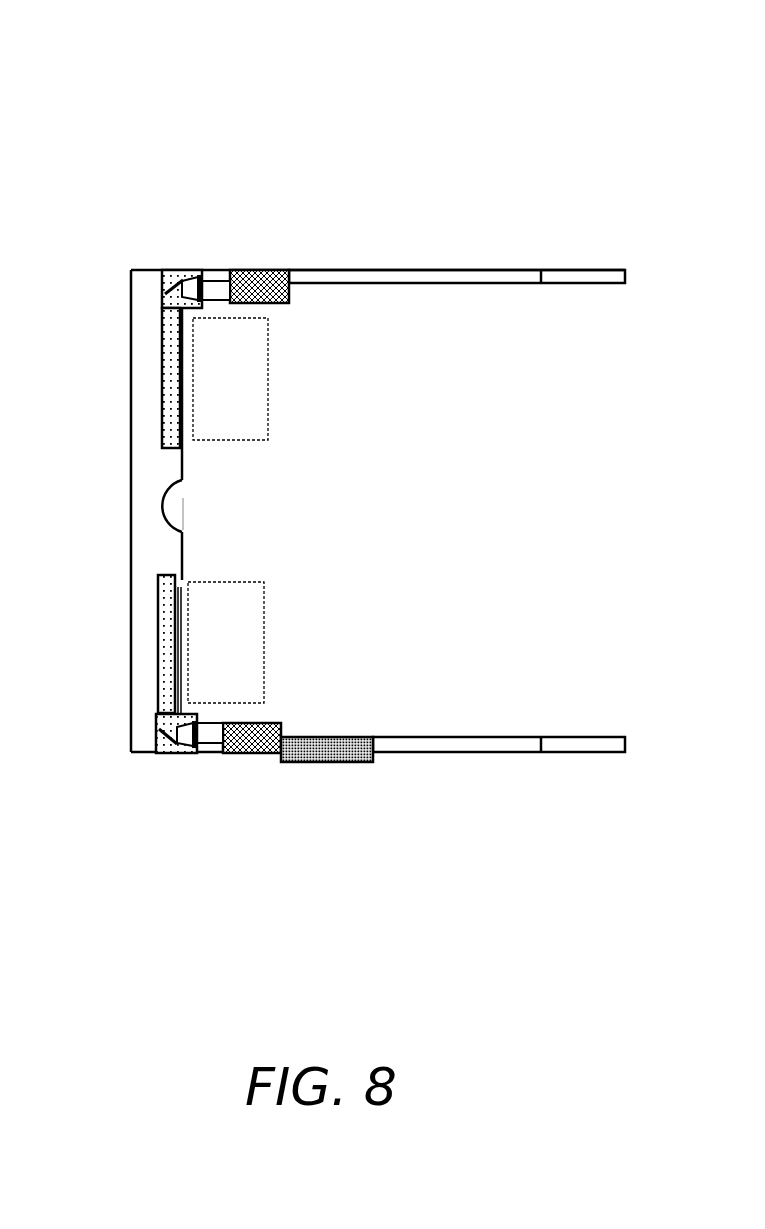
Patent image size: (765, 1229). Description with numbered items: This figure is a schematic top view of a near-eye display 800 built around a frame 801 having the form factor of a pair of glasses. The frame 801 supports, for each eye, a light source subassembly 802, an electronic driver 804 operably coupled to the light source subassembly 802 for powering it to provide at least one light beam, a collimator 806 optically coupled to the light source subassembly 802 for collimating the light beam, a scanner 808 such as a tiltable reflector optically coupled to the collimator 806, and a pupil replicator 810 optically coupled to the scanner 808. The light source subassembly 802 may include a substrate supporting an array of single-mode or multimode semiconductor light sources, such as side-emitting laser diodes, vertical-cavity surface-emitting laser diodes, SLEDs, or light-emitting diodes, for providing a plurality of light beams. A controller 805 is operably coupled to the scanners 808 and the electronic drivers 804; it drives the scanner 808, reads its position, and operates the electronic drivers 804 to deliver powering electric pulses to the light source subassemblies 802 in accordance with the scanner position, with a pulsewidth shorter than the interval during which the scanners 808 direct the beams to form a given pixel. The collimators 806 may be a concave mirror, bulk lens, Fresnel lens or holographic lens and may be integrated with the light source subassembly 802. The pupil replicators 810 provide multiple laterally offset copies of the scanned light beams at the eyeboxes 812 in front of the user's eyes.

The near-eye display 800 is at (363, 122).
The frame 801 is at (505, 270).
The light source subassembly 802 is at (221, 270).
The electronic driver 804 is at (266, 270).
The controller 805 is at (320, 762).
The collimator 806 is at (191, 270).
The scanner 808 is at (163, 293).
The pupil replicator 810 is at (163, 372).
The eyebox 812 is at (240, 387).